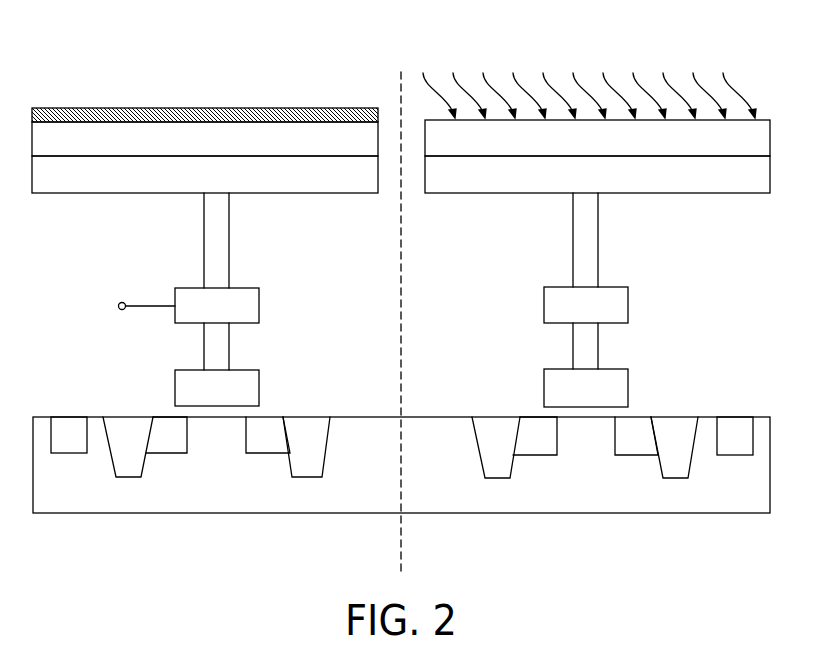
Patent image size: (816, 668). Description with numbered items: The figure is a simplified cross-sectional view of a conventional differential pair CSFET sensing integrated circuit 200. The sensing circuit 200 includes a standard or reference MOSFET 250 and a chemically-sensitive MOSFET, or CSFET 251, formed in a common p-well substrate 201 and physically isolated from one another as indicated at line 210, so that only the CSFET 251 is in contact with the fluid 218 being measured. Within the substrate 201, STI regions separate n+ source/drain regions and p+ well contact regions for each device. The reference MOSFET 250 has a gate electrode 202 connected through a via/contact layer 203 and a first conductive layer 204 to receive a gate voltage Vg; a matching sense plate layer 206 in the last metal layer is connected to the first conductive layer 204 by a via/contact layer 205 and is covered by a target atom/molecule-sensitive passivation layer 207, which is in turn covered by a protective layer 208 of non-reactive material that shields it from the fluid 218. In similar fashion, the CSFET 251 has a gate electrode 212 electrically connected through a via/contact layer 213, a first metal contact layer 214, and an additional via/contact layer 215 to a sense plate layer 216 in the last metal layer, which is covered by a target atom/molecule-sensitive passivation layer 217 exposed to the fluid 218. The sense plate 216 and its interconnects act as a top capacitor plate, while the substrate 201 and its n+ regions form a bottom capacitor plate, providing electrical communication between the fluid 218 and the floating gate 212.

The differential pair CSFET sensing integrated circuit 200 is at (102, 61).
The substrate 201 is at (728, 504).
The gate electrode 202 is at (260, 388).
The via/contact layer 203 is at (231, 342).
The first conductive layer 204 is at (260, 305).
The via/contact layer 205 is at (231, 238).
The matching sense plate layer 206 is at (345, 187).
The target atom/molecule-sensitive layer 207 is at (290, 150).
The protective layer 208 is at (152, 108).
The line 210 is at (402, 288).
The gate electrode 212 is at (629, 387).
The via/contact layer 213 is at (600, 340).
The first metal contact layer 214 is at (629, 302).
The via/contact layer 215 is at (600, 238).
The sense plate layer 216 is at (737, 187).
The target atom/molecule-sensitive passivation layer 217 is at (683, 150).
The fluid 218 is at (612, 68).
The reference MOSFET 250 is at (210, 573).
The chemically-sensitive MOSFET (CSFET) 251 is at (607, 573).